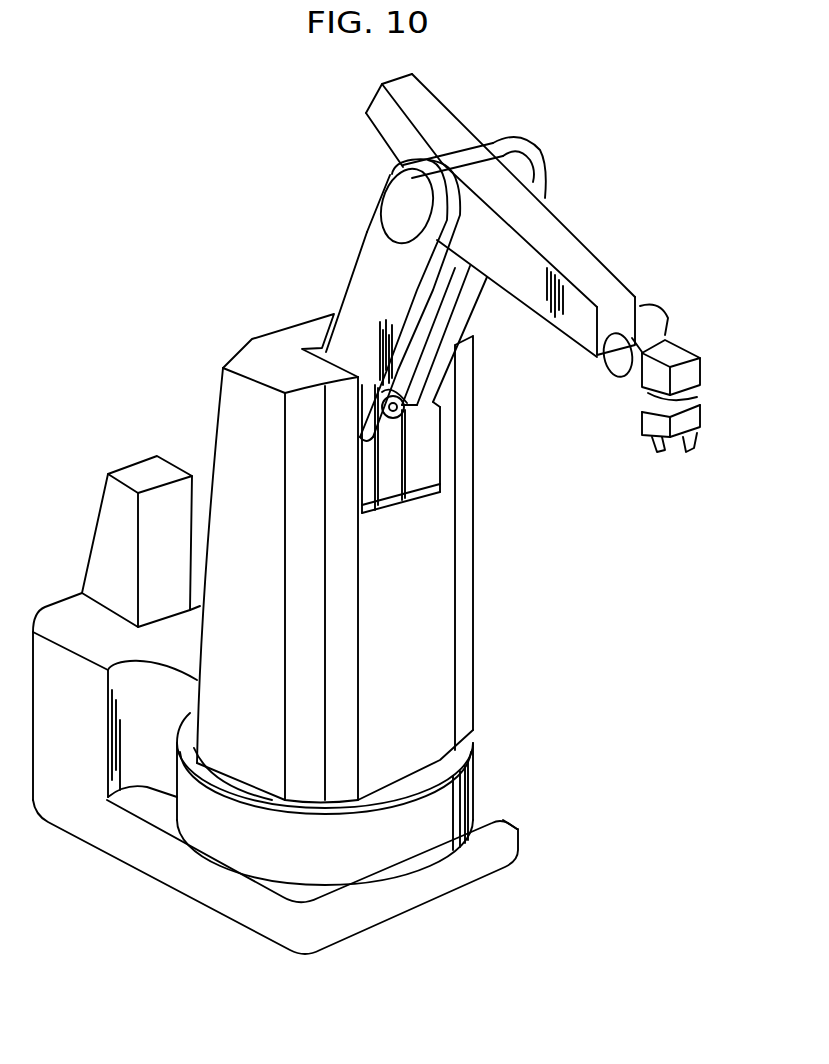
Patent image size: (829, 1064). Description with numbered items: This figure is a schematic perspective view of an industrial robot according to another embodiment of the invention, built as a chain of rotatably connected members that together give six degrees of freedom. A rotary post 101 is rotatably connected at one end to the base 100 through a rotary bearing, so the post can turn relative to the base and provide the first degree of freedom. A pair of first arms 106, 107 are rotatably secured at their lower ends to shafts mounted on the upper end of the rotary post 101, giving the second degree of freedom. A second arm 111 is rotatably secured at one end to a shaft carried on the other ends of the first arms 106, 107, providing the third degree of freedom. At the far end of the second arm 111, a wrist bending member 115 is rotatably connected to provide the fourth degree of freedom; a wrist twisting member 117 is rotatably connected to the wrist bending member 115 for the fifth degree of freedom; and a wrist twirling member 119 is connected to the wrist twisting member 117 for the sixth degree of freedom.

The base 100 is at (520, 838).
The rotary post 101 is at (474, 628).
The first arm 106 is at (357, 304).
The first arm 107 is at (473, 322).
The second arm 111 is at (592, 257).
The wrist bending member 115 is at (620, 367).
The wrist twisting member 117 is at (700, 353).
The wrist twirling member 119 is at (650, 402).